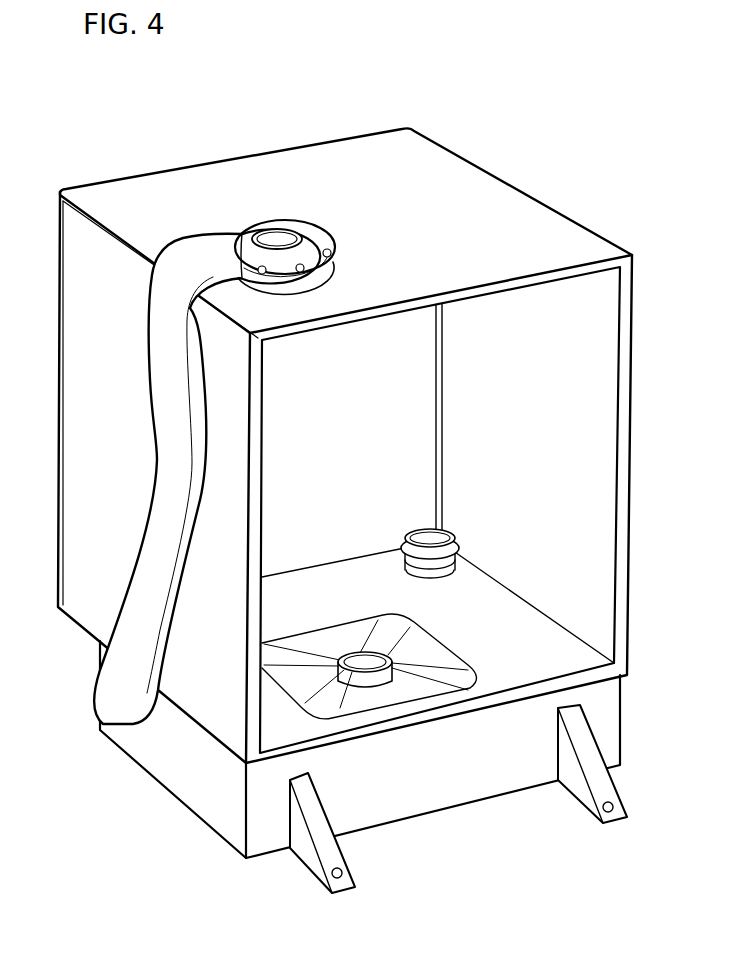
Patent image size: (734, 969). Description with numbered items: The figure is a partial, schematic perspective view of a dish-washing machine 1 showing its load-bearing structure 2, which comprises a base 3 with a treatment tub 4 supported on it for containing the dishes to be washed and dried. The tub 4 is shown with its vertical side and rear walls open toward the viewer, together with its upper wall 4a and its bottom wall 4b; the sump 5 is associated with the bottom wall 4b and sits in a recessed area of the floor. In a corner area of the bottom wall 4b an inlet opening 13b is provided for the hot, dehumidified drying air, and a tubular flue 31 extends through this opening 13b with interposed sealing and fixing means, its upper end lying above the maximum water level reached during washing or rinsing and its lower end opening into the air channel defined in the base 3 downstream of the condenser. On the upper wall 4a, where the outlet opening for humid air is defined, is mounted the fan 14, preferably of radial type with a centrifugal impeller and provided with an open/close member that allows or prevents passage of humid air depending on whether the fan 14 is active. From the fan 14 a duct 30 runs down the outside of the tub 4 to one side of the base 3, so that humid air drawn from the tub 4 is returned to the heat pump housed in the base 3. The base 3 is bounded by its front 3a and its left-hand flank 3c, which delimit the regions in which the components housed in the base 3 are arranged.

The machine 1 is at (396, 510).
The load-bearing structure 2 is at (389, 445).
The base 3 is at (400, 767).
The front 3a is at (462, 785).
The left-hand flank 3c is at (187, 780).
The treatment tub 4 is at (386, 445).
The upper wall 4a is at (545, 231).
The bottom wall 4b is at (560, 648).
The sump 5 is at (432, 657).
The inlet opening 13b is at (446, 580).
The fan 14 is at (240, 221).
The duct 30 is at (153, 455).
The tubular flue 31 is at (419, 522).